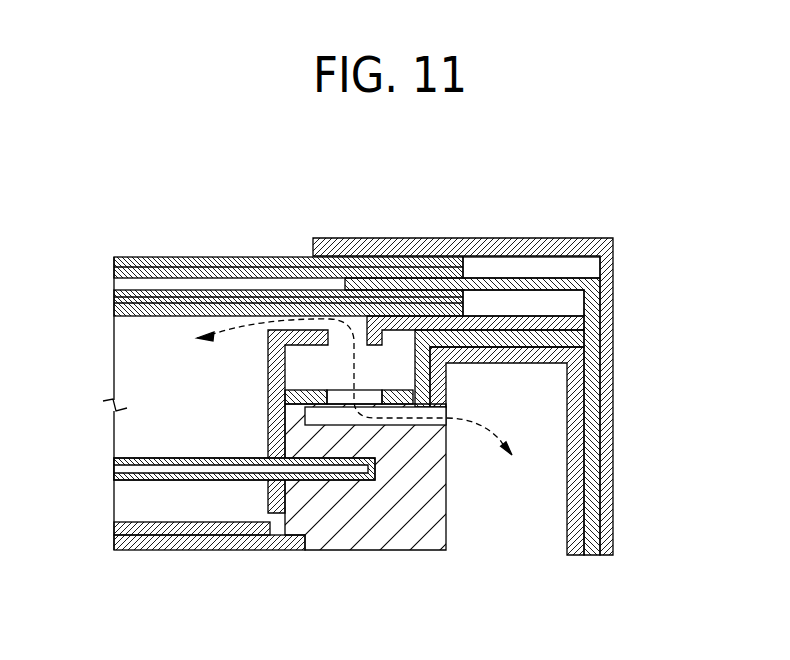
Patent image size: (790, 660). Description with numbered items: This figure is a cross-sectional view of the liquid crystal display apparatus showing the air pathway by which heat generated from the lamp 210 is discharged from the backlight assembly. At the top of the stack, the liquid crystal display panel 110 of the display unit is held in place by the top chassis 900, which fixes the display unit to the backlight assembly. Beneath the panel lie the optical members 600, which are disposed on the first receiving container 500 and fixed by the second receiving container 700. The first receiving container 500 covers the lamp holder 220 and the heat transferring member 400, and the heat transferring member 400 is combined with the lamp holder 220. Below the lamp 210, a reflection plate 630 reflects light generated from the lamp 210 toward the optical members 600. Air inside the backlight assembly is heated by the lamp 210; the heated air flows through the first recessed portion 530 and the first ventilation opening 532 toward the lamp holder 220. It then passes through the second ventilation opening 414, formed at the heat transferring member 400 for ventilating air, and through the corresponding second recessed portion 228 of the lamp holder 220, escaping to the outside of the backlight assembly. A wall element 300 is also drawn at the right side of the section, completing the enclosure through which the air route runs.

The liquid crystal display panel 110 is at (104, 259).
The optical members 600 is at (104, 294).
The first recessed portion 530 is at (281, 318).
The first ventilation opening 532 is at (338, 347).
The second ventilation opening 414 is at (332, 398).
The top chassis 900 is at (449, 250).
The second receiving container 700 is at (546, 284).
The first receiving container 500 is at (583, 321).
The heat transferring member 400 is at (583, 340).
The second recessed portion 228 is at (446, 412).
The reflection plate 630 is at (132, 535).
The lamp 210 is at (183, 480).
The lamp holder 220 is at (378, 528).
The side wall 300 is at (576, 550).